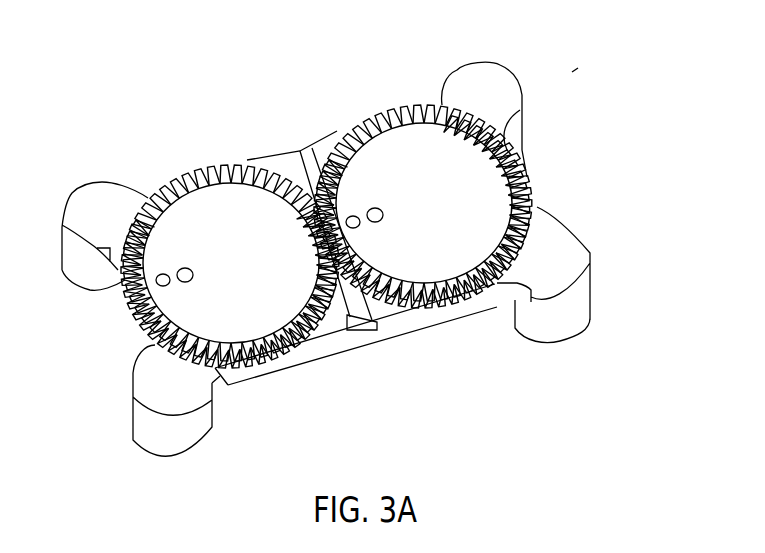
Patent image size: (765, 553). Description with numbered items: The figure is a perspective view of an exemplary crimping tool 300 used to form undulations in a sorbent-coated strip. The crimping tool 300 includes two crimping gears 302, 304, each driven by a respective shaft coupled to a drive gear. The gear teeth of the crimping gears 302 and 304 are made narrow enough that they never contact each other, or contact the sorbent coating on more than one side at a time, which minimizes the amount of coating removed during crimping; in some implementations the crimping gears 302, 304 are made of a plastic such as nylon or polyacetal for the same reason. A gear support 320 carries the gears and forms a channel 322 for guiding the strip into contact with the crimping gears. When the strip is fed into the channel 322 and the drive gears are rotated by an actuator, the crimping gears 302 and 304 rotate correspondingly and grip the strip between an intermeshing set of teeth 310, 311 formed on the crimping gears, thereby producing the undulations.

The crimping tool 300 is at (578, 68).
The crimping gear 302 is at (420, 155).
The crimping gear 304 is at (212, 208).
The teeth 310 is at (430, 290).
The teeth 311 is at (207, 357).
The gear support 320 is at (498, 93).
The channel 322 is at (293, 158).